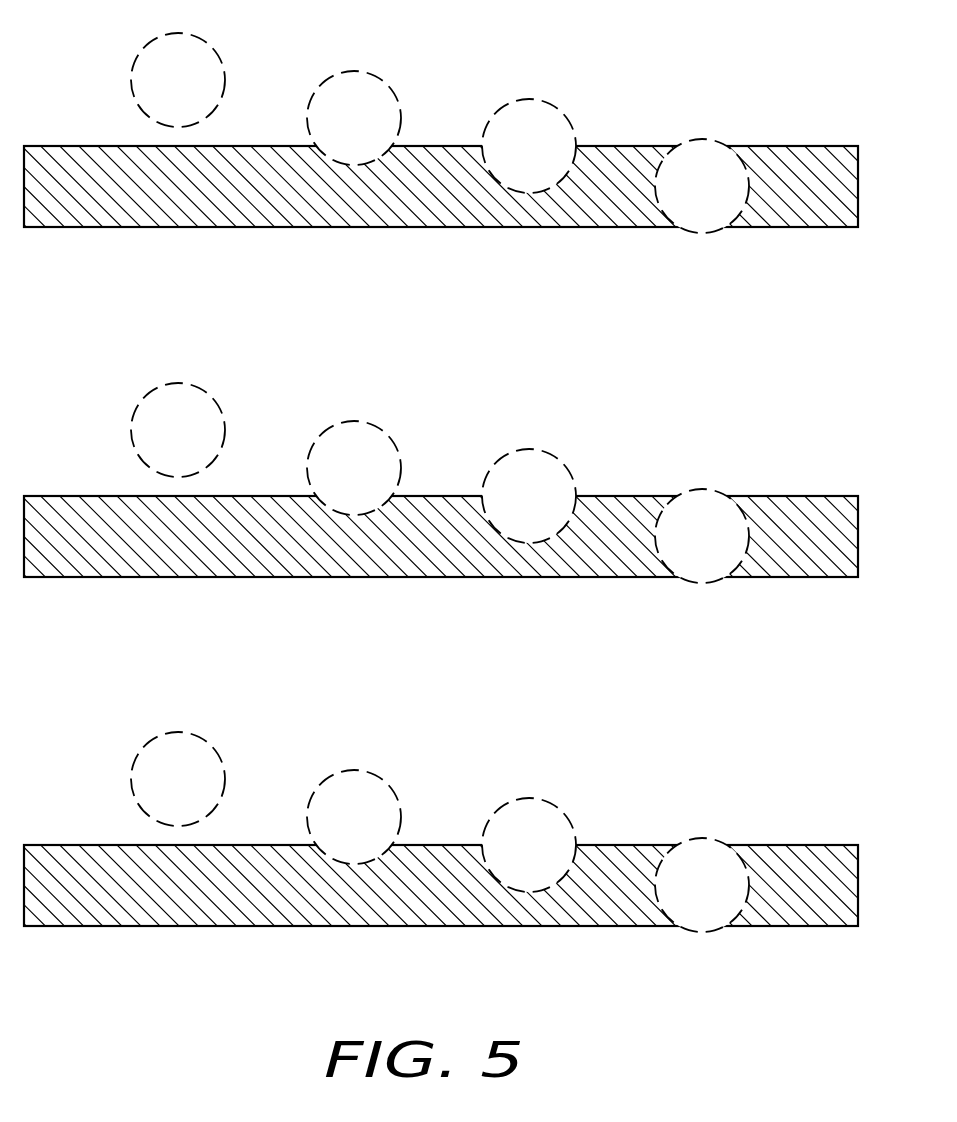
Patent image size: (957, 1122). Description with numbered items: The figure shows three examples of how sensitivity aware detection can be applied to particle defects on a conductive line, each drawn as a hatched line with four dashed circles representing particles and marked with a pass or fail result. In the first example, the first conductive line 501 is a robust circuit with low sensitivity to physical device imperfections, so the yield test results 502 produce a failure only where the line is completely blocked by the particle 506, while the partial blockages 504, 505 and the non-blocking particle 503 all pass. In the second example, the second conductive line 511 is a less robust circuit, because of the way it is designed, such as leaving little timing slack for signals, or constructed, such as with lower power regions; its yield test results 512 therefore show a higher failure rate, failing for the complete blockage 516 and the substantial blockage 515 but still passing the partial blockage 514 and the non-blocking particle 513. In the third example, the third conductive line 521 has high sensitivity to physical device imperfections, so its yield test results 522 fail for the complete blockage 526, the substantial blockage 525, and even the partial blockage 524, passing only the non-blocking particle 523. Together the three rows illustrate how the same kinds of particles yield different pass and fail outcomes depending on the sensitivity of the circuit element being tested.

The first conductive line 501 is at (182, 228).
The yield test results 502 is at (758, 36).
The non-blocking particle 503 is at (158, 44).
The partial blockage 504 is at (323, 85).
The partial blockage 505 is at (497, 112).
The particle completely blocking the line 506 is at (701, 139).
The second conductive line 511 is at (462, 557).
The yield test results 512 is at (462, 486).
The non-blocking particle 513 is at (157, 419).
The partial blockage 514 is at (332, 458).
The substantial blockage 515 is at (507, 486).
The complete blockage 516 is at (698, 517).
The third conductive line 521 is at (462, 906).
The yield test results 522 is at (462, 835).
The non-blocking particle 523 is at (157, 768).
The partial blockage 524 is at (332, 807).
The substantial blockage 525 is at (507, 835).
The complete blockage 526 is at (698, 866).